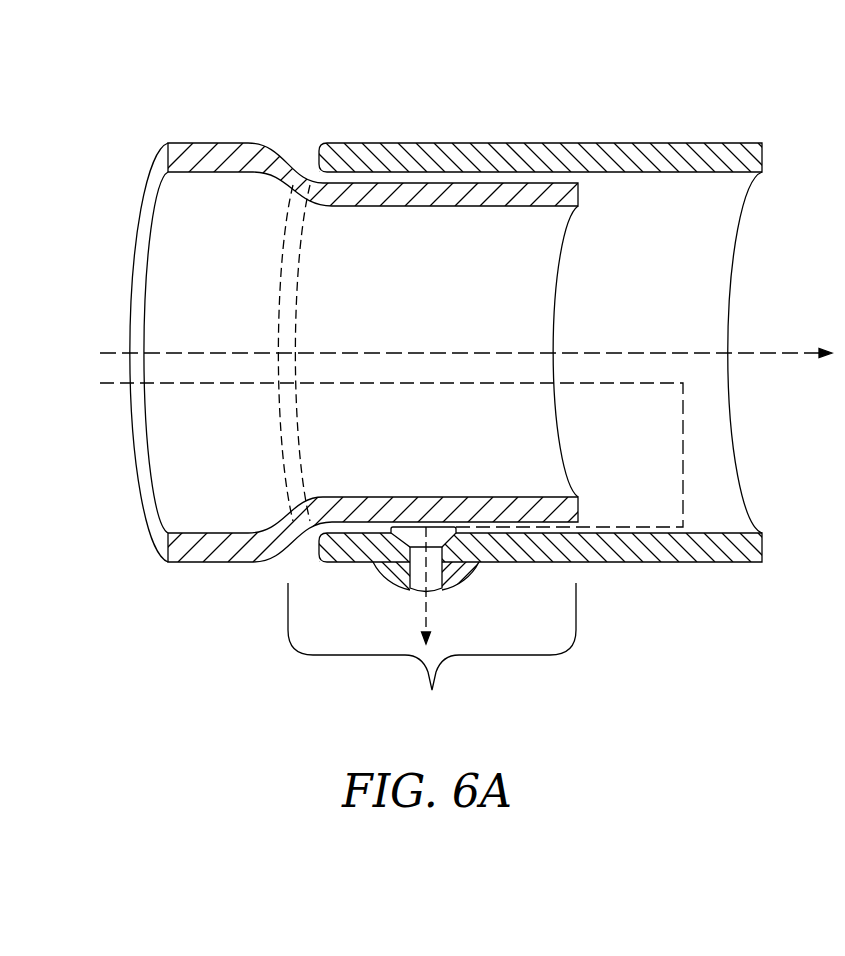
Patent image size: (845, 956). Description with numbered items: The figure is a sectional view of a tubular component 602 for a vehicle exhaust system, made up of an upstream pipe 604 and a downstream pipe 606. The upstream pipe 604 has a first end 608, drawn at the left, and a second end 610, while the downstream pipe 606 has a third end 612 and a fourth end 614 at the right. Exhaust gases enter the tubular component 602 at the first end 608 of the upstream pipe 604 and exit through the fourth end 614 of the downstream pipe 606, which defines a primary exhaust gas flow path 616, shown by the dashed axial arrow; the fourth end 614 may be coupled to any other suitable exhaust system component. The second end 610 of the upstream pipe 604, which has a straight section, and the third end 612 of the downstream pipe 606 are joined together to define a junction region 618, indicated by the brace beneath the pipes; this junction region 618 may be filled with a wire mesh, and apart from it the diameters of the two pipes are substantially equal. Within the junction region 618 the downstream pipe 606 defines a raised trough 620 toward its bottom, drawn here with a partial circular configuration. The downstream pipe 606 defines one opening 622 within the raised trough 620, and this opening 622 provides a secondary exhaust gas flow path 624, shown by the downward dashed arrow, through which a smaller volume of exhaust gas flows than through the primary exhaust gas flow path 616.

The tubular component 602 is at (222, 86).
The upstream pipe 604 is at (220, 585).
The downstream pipe 606 is at (594, 578).
The first end 608 is at (121, 444).
The second end 610 is at (564, 427).
The third end 612 is at (306, 142).
The fourth end 614 is at (746, 224).
The primary exhaust gas flow path 616 is at (780, 351).
The junction region 618 is at (432, 655).
The raised trough 620 is at (373, 579).
The opening 622 is at (430, 567).
The secondary exhaust gas flow path 624 is at (428, 603).